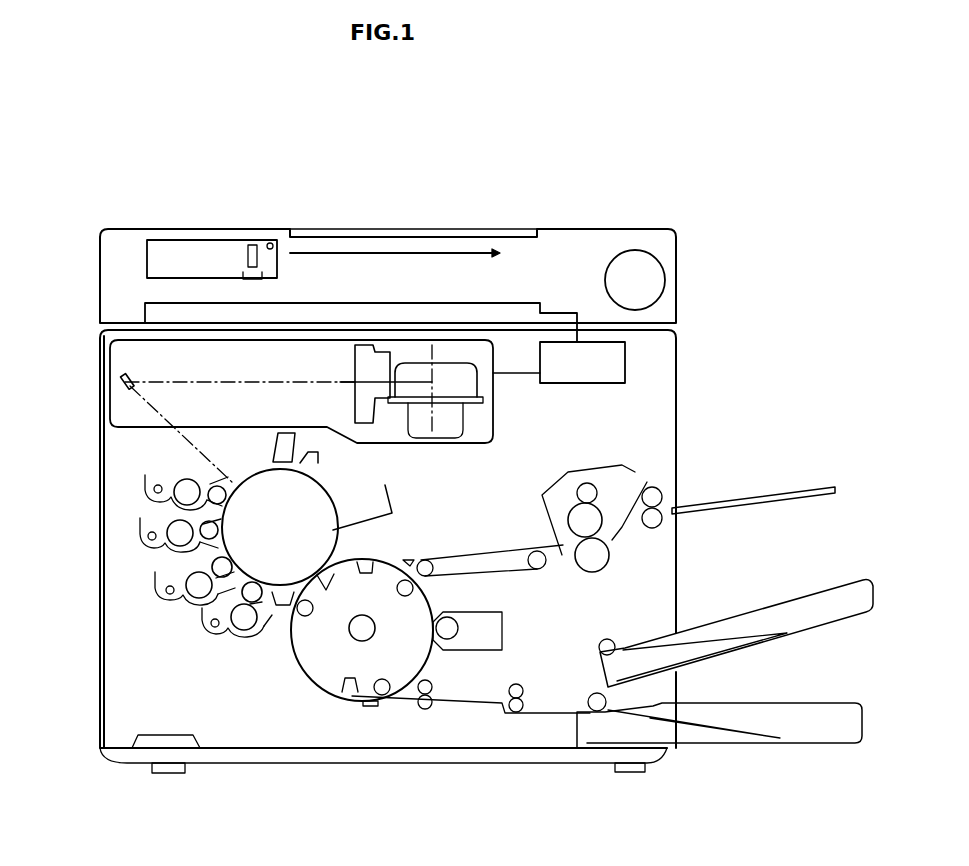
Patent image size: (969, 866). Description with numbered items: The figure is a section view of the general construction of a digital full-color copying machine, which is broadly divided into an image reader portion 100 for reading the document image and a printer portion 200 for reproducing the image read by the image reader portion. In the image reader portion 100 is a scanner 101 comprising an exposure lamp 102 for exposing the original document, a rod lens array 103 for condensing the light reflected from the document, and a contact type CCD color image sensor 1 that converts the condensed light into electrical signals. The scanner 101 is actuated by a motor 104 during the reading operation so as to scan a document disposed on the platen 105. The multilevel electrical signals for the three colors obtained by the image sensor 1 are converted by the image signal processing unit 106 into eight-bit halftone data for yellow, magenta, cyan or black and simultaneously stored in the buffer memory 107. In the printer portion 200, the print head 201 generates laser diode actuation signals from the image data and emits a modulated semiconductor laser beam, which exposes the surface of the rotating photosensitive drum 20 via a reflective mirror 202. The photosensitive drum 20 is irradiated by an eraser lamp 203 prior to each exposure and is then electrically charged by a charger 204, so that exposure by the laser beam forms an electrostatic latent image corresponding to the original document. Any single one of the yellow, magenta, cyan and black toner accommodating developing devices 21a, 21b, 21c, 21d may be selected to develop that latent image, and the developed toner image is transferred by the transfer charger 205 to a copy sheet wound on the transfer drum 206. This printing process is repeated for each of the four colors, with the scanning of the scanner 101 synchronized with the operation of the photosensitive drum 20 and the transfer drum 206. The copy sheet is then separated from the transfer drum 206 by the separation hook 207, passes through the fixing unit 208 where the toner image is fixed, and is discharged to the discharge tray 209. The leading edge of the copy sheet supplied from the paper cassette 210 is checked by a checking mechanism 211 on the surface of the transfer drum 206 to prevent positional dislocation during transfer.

The image reader portion 100 is at (95, 268).
The scanner 101 is at (200, 240).
The exposure lamp 102 is at (270, 243).
The rod lens array 103 is at (247, 257).
The contact type CCD color image sensor 1 is at (257, 278).
The motor 104 is at (664, 272).
The platen 105 is at (470, 228).
The image signal processing unit 106 is at (145, 313).
The buffer memory 107 is at (627, 365).
The printer portion 200 is at (95, 453).
The print head 201 is at (478, 378).
The reflective mirror 202 is at (122, 376).
The eraser lamp 203 is at (322, 460).
The charger 204 is at (283, 433).
The photosensitive drum 20 is at (296, 536).
The developing device 21a is at (145, 493).
The developing device 21b is at (140, 540).
The developing device 21c is at (155, 590).
The developing device 21d is at (202, 625).
The transfer charger 205 is at (333, 595).
The transfer drum 206 is at (314, 683).
The separation hook 207 is at (412, 561).
The fixing unit 208 is at (580, 472).
The discharge tray 209 is at (753, 491).
The paper cassette 210 is at (793, 647).
The checking mechanism 211 is at (375, 707).